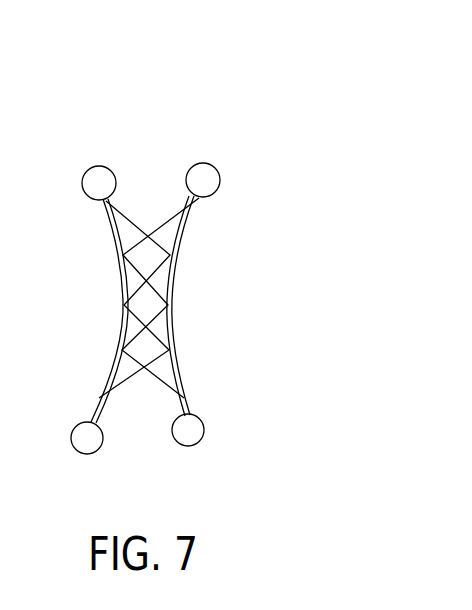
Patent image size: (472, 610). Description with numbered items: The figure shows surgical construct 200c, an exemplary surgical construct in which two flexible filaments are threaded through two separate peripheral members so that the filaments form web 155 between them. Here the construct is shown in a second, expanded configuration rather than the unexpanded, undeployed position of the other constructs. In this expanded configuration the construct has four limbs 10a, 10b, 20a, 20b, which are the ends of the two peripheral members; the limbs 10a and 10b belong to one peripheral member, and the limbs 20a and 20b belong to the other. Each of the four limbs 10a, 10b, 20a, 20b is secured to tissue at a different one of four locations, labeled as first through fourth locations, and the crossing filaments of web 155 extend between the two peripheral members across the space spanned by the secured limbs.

The surgical construct 200c is at (256, 155).
The limb 10a is at (100, 390).
The limb 10b is at (110, 220).
The limb 20a is at (183, 388).
The limb 20b is at (190, 218).
The web 155 is at (150, 325).